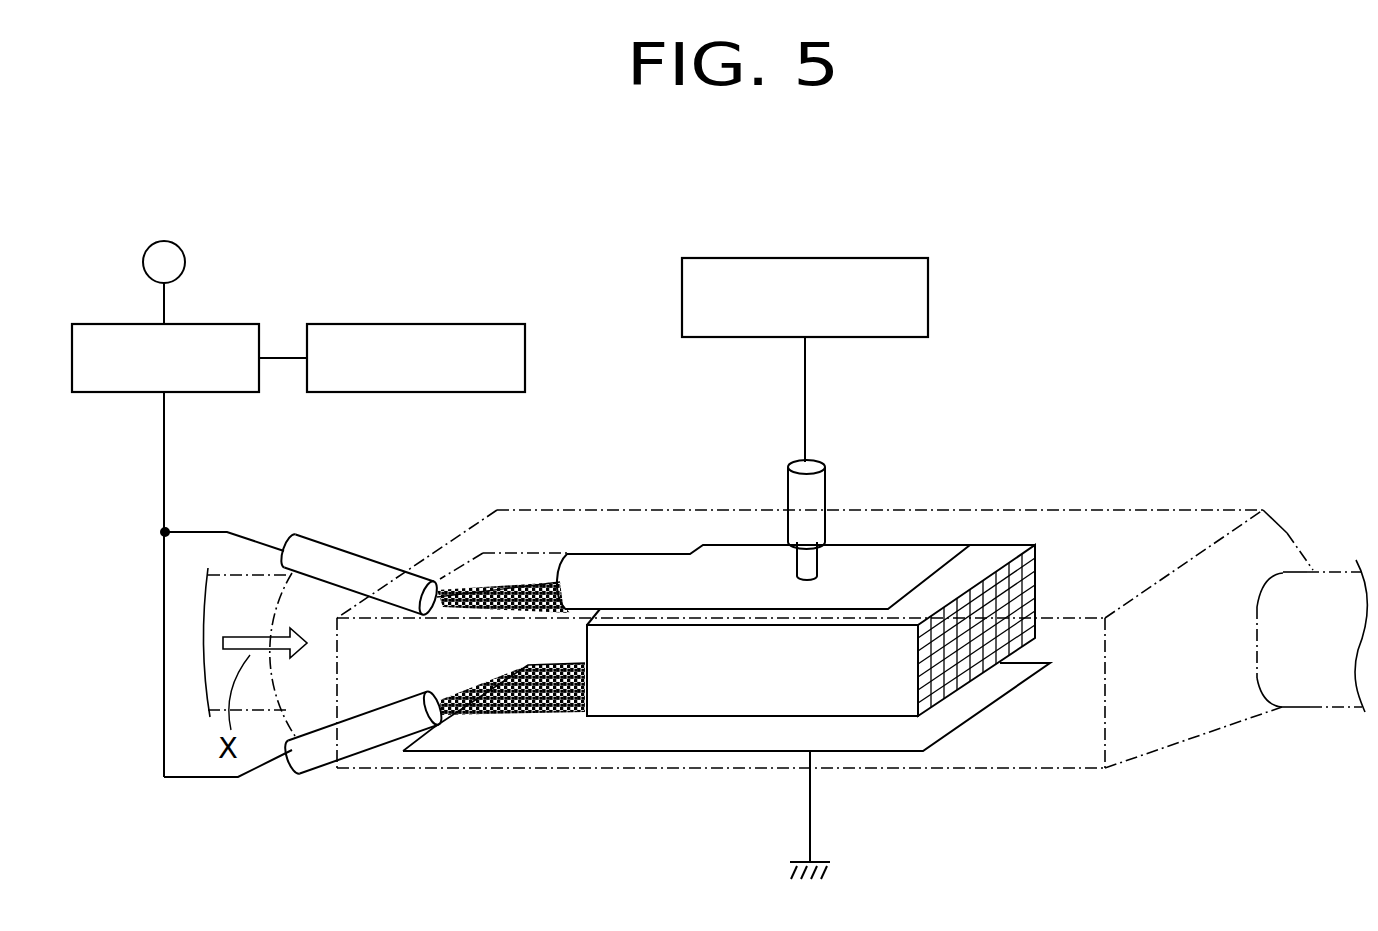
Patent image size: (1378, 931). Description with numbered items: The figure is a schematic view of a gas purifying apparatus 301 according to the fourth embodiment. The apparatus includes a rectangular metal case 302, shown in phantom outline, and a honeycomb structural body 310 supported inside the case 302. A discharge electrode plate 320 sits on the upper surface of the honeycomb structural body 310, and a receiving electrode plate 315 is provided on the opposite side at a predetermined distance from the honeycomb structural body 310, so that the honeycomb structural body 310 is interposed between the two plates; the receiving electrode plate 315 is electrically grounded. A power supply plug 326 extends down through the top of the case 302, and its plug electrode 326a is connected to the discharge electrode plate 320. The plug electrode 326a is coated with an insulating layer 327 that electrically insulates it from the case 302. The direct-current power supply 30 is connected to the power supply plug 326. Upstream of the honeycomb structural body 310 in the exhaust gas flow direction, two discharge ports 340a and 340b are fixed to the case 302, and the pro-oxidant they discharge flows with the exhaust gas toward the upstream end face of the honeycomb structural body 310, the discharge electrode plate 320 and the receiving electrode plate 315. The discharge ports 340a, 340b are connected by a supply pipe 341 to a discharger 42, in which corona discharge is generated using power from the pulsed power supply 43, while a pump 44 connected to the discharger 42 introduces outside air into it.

The direct-current power supply 30 is at (928, 292).
The discharger 42 is at (208, 323).
The pulsed power supply 43 is at (405, 323).
The pump 44 is at (182, 248).
The gas purifying apparatus 301 is at (852, 499).
The case 302 is at (1080, 510).
The honeycomb structural body 310 is at (1032, 593).
The receiving electrode plate 315 is at (930, 735).
The discharge electrode plate 320 is at (925, 563).
The power supply plug 326 is at (790, 497).
The plug electrode 326a is at (805, 562).
The insulating layer 327 is at (817, 490).
The discharge port 340a is at (302, 550).
The discharge port 340b is at (315, 763).
The supply pipe 341 is at (165, 448).